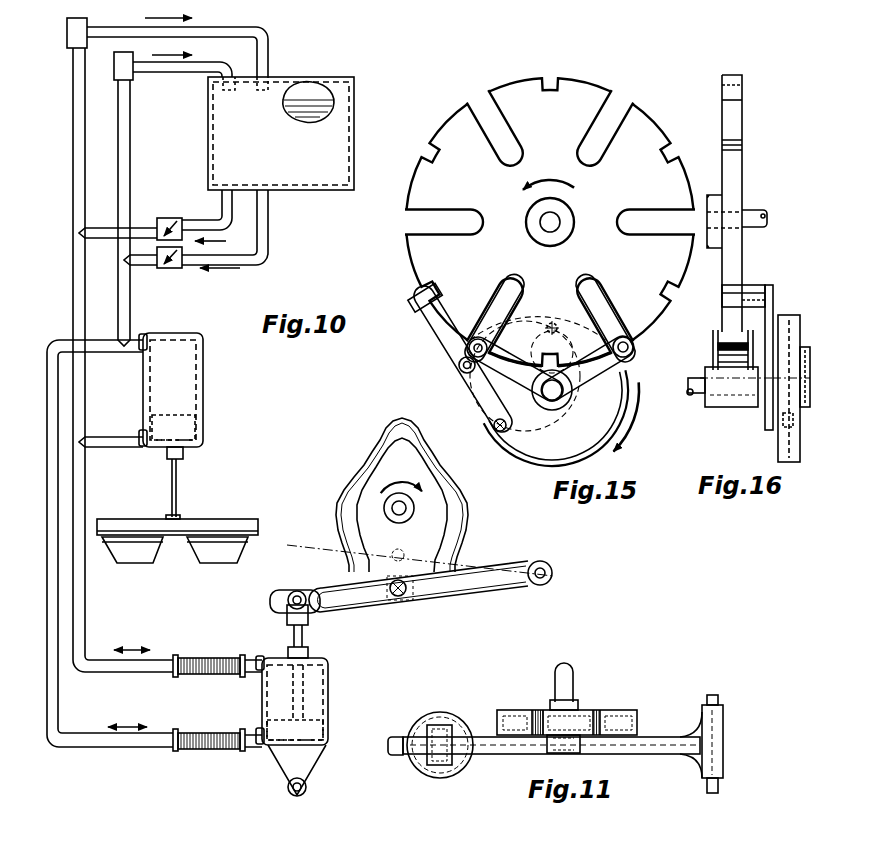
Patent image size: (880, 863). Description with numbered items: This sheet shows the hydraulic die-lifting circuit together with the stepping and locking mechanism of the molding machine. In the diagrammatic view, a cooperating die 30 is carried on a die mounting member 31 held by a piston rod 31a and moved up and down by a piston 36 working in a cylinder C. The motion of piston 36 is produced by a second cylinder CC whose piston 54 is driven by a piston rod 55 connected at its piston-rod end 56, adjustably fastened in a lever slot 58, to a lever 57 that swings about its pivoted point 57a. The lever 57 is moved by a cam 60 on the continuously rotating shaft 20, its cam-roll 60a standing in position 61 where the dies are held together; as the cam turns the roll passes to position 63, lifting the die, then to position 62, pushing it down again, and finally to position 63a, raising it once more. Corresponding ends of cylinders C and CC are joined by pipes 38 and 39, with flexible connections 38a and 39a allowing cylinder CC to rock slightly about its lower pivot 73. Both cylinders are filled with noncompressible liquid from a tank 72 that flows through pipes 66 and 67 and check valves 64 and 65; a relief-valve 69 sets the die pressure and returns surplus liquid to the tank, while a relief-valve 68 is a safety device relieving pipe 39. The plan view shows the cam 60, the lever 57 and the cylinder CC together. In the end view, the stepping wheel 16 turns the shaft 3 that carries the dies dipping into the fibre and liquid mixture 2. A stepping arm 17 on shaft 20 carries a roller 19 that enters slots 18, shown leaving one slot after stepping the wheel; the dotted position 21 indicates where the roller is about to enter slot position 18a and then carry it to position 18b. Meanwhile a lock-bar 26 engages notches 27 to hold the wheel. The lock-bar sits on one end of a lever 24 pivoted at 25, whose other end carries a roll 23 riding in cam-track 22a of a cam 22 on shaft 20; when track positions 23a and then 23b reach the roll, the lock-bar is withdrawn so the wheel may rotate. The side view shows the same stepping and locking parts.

In FIG. 10, the mixture of fibres and liquid 2 is at (318, 103).
In FIG. 15, the shaft 3 is at (553, 227).
In FIG. 16, the shaft 3 is at (752, 217).
In FIG. 15, the stepping wheel 16 is at (647, 128).
In FIG. 16, the stepping wheel 16 is at (738, 120).
In FIG. 15, the stepping arm 17 is at (633, 358).
In FIG. 16, the stepping arm 17 is at (716, 364).
In FIG. 15, the slots 18 is at (592, 140).
In FIG. 16, the slots 18 is at (732, 97).
In FIG. 15, the slot position 18a is at (505, 300).
In FIG. 15, the slot position 18b is at (605, 322).
In FIG. 15, the roller 19 is at (636, 345).
In FIG. 16, the roller 19 is at (735, 333).
In FIG. 10, the shaft 20 is at (403, 512).
In FIG. 15, the shaft 20 is at (554, 400).
In FIG. 16, the shaft 20 is at (695, 395).
In FIG. 11, the shaft 20 is at (569, 684).
In FIG. 15, the dotted line position 21 is at (470, 352).
In FIG. 15, the cam 22 is at (603, 455).
In FIG. 16, the cam 22 is at (790, 315).
In FIG. 15, the cam-track 22a is at (521, 442).
In FIG. 15, the roll 23 is at (508, 425).
In FIG. 16, the roll 23 is at (789, 426).
In FIG. 15, the cam track position 23a is at (552, 324).
In FIG. 15, the cam track position 23b is at (496, 326).
In FIG. 15, the lever 24 is at (484, 400).
In FIG. 16, the lever 24 is at (771, 406).
In FIG. 15, the pivot 25 is at (461, 369).
In FIG. 15, the lock-bar 26 is at (418, 306).
In FIG. 16, the lock-bar 26 is at (752, 289).
In FIG. 15, the notches 27 is at (548, 89).
In FIG. 16, the notches 27 is at (743, 146).
In FIG. 10, the cooperating die 30 is at (207, 542).
In FIG. 10, the die mounting member 31 is at (216, 528).
In FIG. 10, the piston rod 31a is at (178, 484).
In FIG. 10, the piston 36 is at (200, 425).
In FIG. 10, the pipe 38 is at (53, 393).
In FIG. 10, the flexible connection 38a is at (213, 733).
In FIG. 10, the pipe 39 is at (83, 414).
In FIG. 10, the flexible connection 39a is at (208, 659).
In FIG. 10, the piston 54 is at (320, 725).
In FIG. 10, the piston rod 55 is at (305, 638).
In FIG. 11, the piston rod 55 is at (424, 776).
In FIG. 10, the piston-rod end 56 is at (285, 615).
In FIG. 10, the lever 57 is at (366, 606).
In FIG. 11, the lever 57 is at (638, 751).
In FIG. 10, the pivoted point 57a is at (547, 583).
In FIG. 11, the pivoted point 57a is at (714, 693).
In FIG. 10, the lever slot 58 is at (291, 594).
In FIG. 10, the cam 60 is at (466, 533).
In FIG. 11, the cam 60 is at (515, 709).
In FIG. 10, the cam-roll 60a is at (410, 603).
In FIG. 11, the cam-roll 60a is at (601, 711).
In FIG. 10, the cam position 61 is at (408, 591).
In FIG. 11, the cam position 61 is at (563, 744).
In FIG. 10, the cam position 62 is at (392, 426).
In FIG. 10, the cam position 63 is at (456, 504).
In FIG. 10, the cam position 63a is at (347, 512).
In FIG. 10, the check valve 64 is at (170, 268).
In FIG. 10, the check valve 65 is at (165, 218).
In FIG. 10, the pipe 66 is at (269, 222).
In FIG. 10, the pipe 67 is at (226, 208).
In FIG. 10, the relief-valve 68 is at (70, 33).
In FIG. 10, the relief-valve 69 is at (128, 70).
In FIG. 10, the tank 72 is at (335, 132).
In FIG. 10, the pivot 73 is at (302, 792).
In FIG. 10, the cylinder C is at (194, 397).
In FIG. 10, the cylinder CC is at (330, 687).
In FIG. 11, the cylinder CC is at (455, 779).